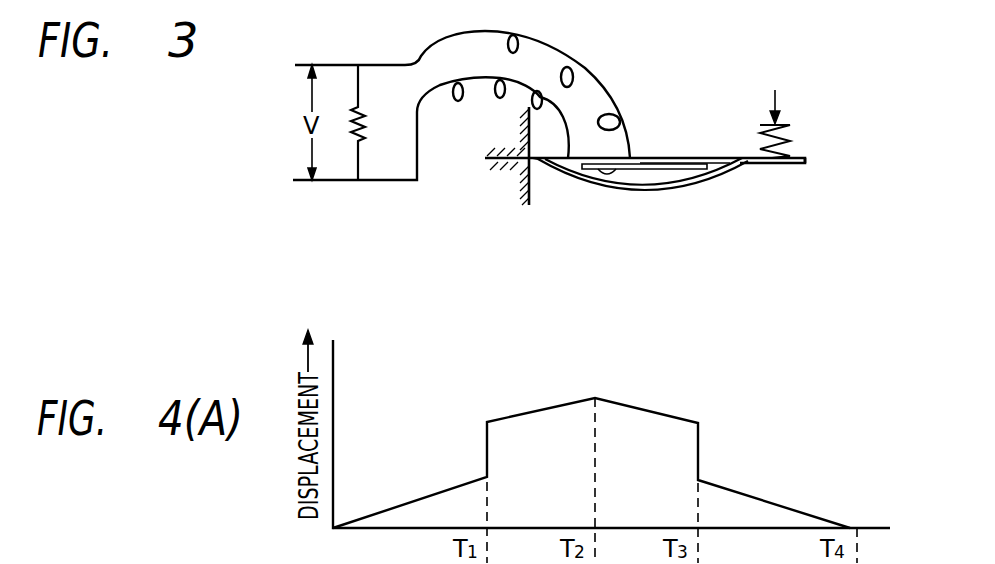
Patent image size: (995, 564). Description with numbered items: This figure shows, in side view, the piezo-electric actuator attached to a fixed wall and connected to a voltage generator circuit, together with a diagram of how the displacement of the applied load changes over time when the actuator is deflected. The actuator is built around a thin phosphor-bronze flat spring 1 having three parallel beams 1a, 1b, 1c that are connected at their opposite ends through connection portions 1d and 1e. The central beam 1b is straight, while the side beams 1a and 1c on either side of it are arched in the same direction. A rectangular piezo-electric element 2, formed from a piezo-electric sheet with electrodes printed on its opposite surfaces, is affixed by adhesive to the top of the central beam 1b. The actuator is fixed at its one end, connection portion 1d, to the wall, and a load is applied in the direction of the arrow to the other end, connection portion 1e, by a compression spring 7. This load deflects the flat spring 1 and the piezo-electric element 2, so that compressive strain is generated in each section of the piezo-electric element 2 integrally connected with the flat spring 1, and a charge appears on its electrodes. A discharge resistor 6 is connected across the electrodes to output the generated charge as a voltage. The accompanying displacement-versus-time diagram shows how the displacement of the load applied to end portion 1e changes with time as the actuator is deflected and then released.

The flat spring 1 is at (726, 177).
The beam 1a is at (627, 192).
The central beam 1b is at (665, 157).
The beam 1c is at (621, 211).
The connection portion 1d is at (505, 168).
The connection portion 1e is at (797, 166).
The piezo-electric element 2 is at (690, 167).
The discharge resistor 6 is at (367, 123).
The compression spring 7 is at (788, 149).